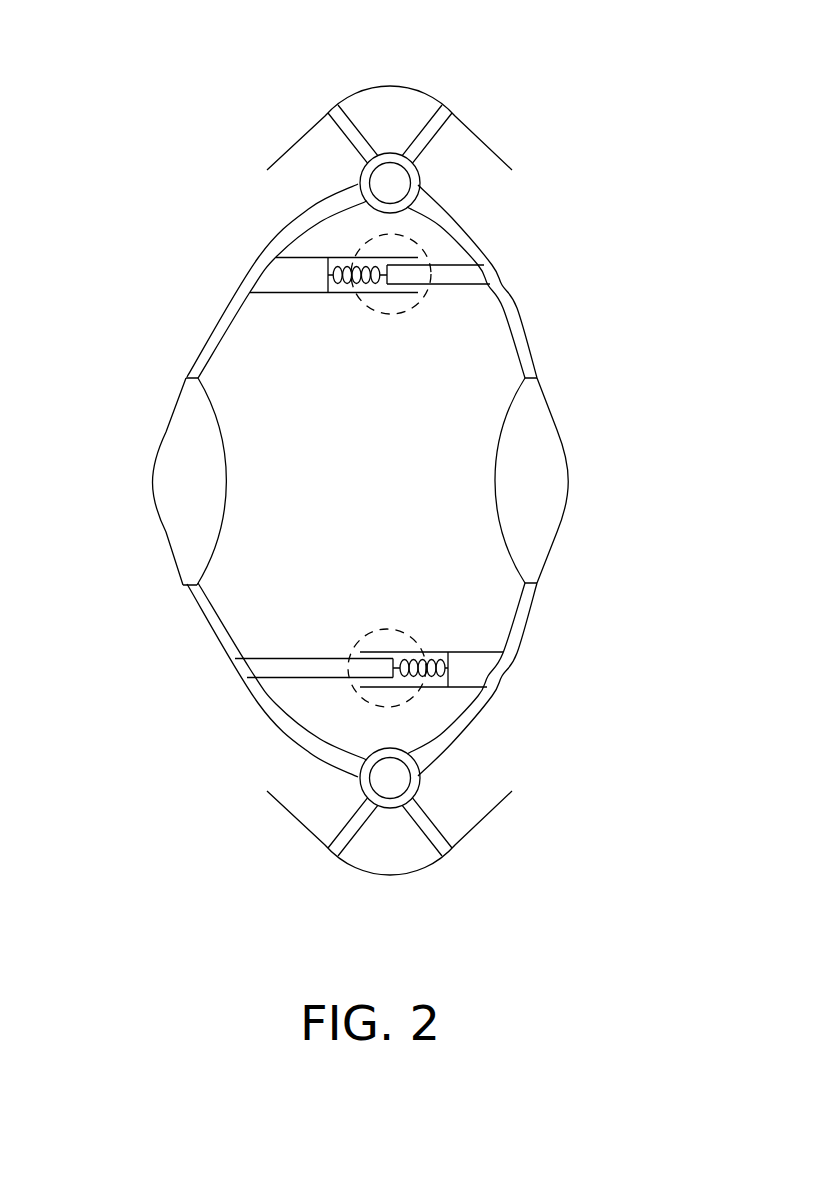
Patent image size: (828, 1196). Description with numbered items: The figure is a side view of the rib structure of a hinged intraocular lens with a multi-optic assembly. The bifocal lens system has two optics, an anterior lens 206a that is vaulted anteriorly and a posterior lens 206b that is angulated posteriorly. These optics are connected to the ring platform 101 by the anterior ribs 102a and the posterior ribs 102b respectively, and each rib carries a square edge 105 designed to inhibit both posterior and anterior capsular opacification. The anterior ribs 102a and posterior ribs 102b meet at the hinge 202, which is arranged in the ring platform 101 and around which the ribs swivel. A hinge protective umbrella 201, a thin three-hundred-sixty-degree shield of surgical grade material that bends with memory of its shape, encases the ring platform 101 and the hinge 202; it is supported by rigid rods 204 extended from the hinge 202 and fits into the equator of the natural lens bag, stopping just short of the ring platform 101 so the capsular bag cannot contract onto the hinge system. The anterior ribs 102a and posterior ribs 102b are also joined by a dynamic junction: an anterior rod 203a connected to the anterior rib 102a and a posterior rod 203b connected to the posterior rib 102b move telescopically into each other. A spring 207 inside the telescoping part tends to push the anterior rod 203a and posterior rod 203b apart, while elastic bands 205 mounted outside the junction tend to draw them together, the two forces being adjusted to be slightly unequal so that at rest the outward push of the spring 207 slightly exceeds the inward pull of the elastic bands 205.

The ring platform 101 is at (365, 480).
The anterior ribs 102a is at (523, 323).
The posterior ribs 102b is at (308, 208).
The square edge 105 is at (538, 378).
The hinge protective umbrella 201 is at (473, 133).
The hinge 202 is at (397, 184).
The anterior rod 203a is at (478, 275).
The posterior rod 203b is at (284, 275).
The rigid rod 204 is at (362, 128).
The elastic bands 205 is at (397, 310).
The anterior lens 206a is at (568, 480).
The posterior lens 206b is at (155, 443).
The spring 207 is at (342, 280).